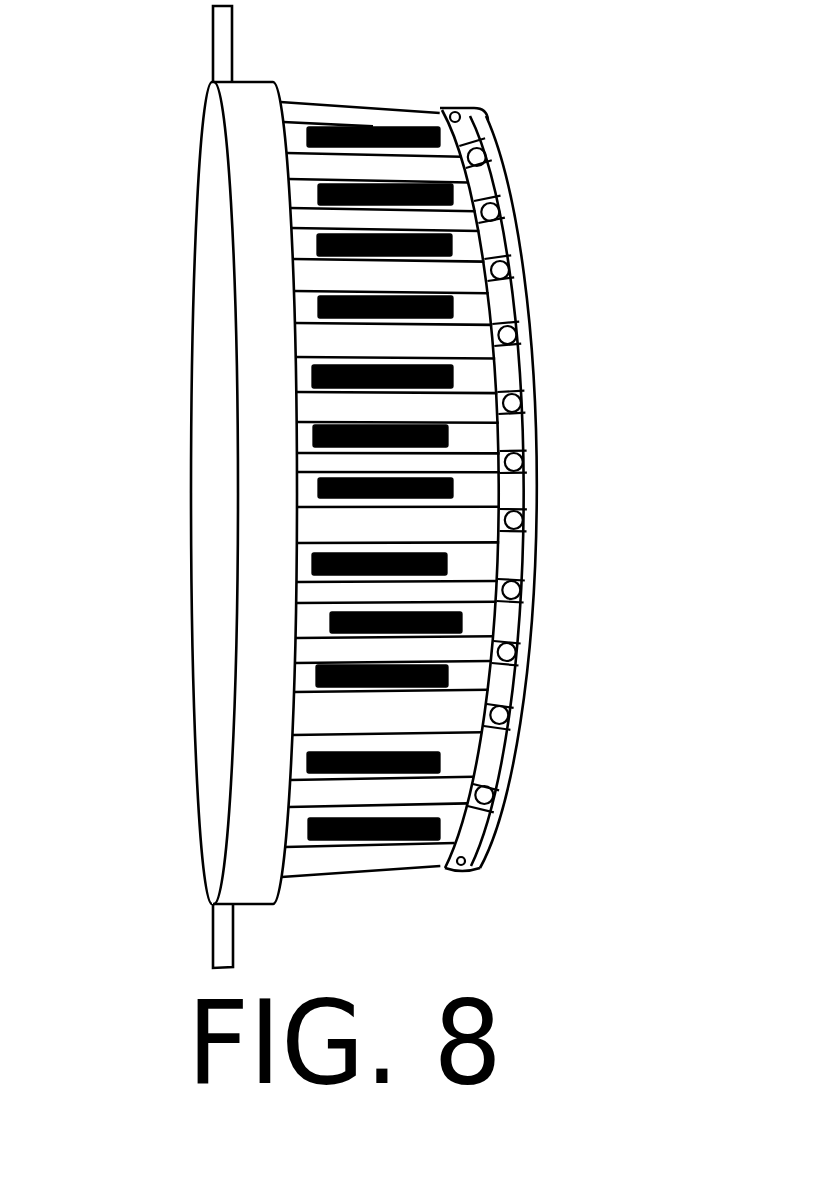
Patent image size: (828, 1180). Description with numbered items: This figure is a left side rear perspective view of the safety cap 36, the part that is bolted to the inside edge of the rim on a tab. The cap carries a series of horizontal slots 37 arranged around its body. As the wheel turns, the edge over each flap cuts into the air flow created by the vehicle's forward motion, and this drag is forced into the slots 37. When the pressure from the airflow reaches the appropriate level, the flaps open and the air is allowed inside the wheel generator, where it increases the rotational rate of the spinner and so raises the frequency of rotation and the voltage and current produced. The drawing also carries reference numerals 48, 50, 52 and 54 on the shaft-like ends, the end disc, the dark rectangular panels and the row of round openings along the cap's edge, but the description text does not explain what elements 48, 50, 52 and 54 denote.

The shaft 48 is at (212, 37).
The end disc 50 is at (297, 410).
The magnets 52 is at (453, 190).
The safety cap 36 is at (487, 118).
The horizontal slots 37 is at (528, 520).
The apertures 54 is at (528, 330).